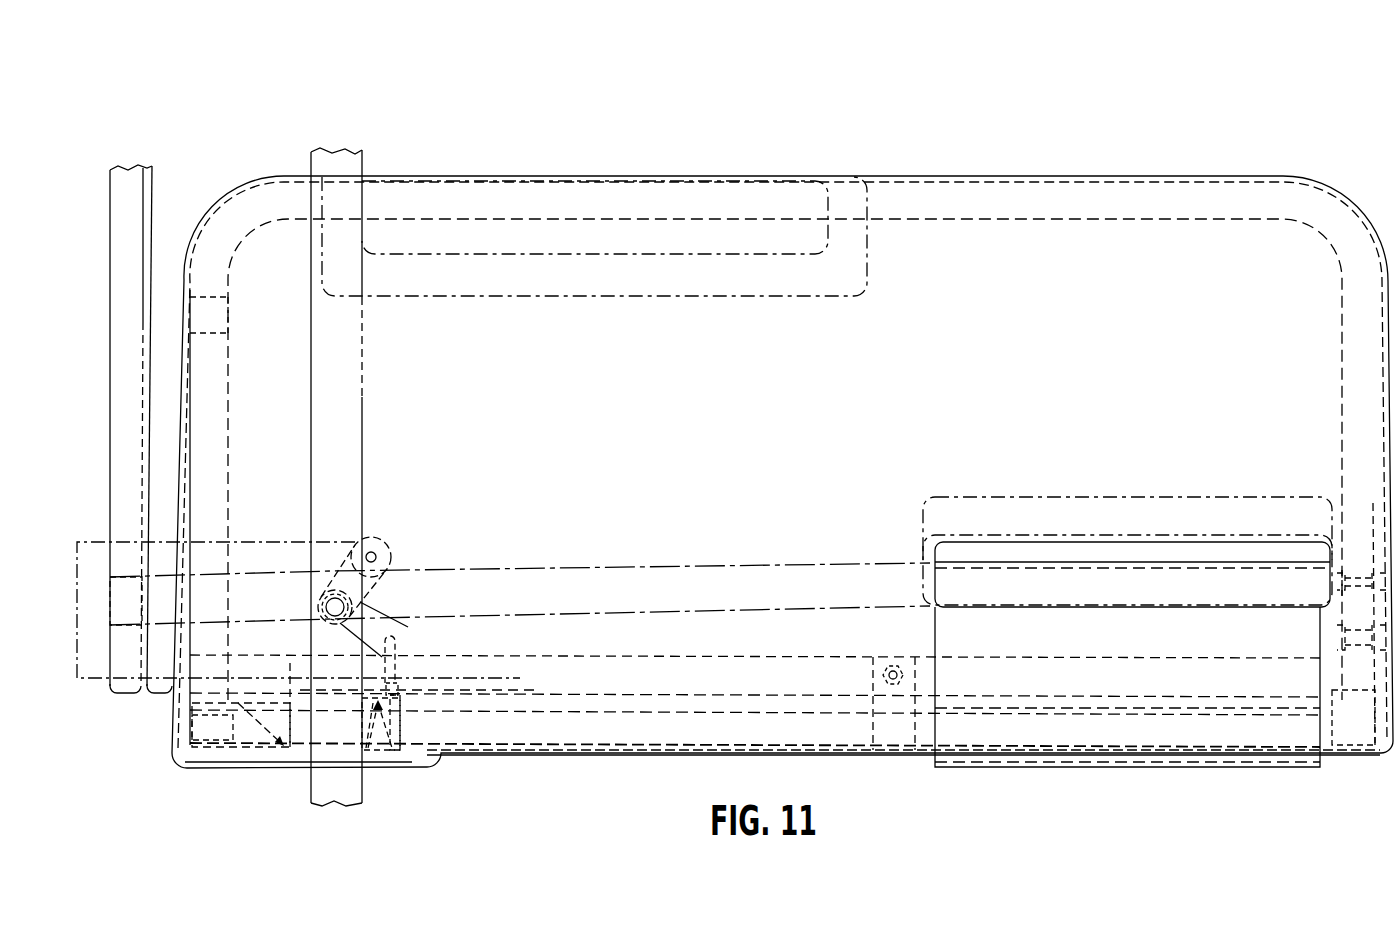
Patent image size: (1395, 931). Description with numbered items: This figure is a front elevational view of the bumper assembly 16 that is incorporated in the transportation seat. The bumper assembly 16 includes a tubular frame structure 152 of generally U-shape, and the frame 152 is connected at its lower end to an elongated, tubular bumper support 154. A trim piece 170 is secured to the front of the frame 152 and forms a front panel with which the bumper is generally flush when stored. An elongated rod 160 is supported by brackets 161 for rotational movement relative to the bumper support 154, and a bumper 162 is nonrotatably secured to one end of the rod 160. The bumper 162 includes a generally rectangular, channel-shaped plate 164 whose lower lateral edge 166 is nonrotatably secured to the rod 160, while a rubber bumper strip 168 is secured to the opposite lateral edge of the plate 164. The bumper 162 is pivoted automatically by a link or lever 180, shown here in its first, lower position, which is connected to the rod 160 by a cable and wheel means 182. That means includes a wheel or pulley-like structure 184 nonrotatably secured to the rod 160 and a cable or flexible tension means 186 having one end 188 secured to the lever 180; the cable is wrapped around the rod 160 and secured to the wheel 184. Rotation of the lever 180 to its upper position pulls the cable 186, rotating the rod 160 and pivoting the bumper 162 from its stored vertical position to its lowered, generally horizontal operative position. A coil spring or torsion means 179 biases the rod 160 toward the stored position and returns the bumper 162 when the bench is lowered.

The bumper assembly 16 is at (1132, 160).
The tubular frame structure 152 is at (612, 196).
The tubular bumper support 154 is at (796, 677).
The elongated rod 160 is at (712, 732).
The brackets 161 is at (878, 672).
The bumper 162 is at (1165, 490).
The channel-shaped plate 164 is at (1133, 644).
The lower lateral edge 166 is at (1226, 768).
The rubber bumper strip 168 is at (1037, 553).
The trim piece 170 is at (1003, 272).
The coil spring or torsion means 179 is at (258, 735).
The link or lever 180 is at (399, 640).
The cable and wheel means 182 is at (414, 688).
The wheel or pulley-like structure 184 is at (402, 723).
The cable or flexible tension means 186 is at (400, 677).
The cable end 188 is at (397, 680).